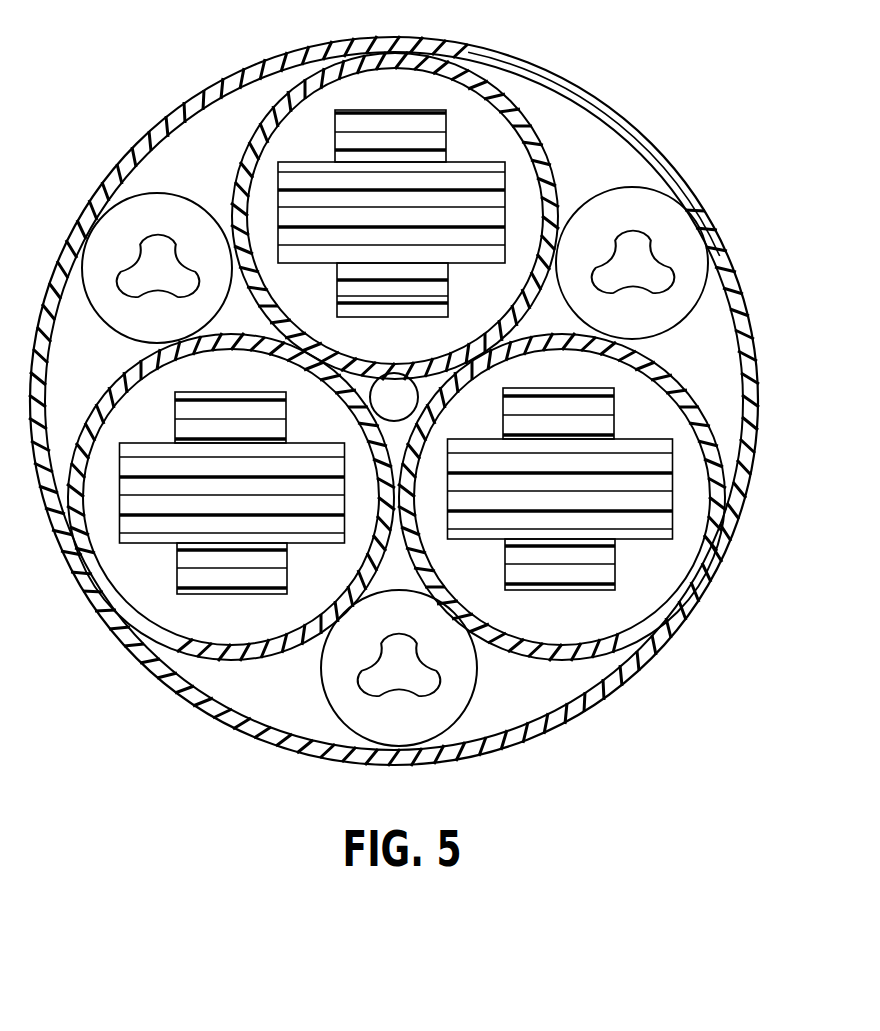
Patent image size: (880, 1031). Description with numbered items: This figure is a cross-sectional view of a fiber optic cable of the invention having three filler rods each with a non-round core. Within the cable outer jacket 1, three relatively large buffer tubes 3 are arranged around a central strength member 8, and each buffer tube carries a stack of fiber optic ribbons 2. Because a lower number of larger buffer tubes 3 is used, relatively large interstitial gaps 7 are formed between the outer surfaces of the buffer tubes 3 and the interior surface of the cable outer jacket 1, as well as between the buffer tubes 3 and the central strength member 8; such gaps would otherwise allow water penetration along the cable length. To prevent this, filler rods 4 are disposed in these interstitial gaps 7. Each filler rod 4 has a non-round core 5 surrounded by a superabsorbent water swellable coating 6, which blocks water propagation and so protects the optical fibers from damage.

The cable outer jacket 1 is at (603, 100).
The ribbons 2 is at (446, 140).
The buffer tubes 3 is at (487, 76).
The filler rods 4 is at (122, 200).
The non-round core 5 is at (151, 282).
The superabsorbent water swellable coating 6 is at (396, 412).
The interstitial gaps 7 is at (232, 92).
The central strength member 8 is at (372, 407).